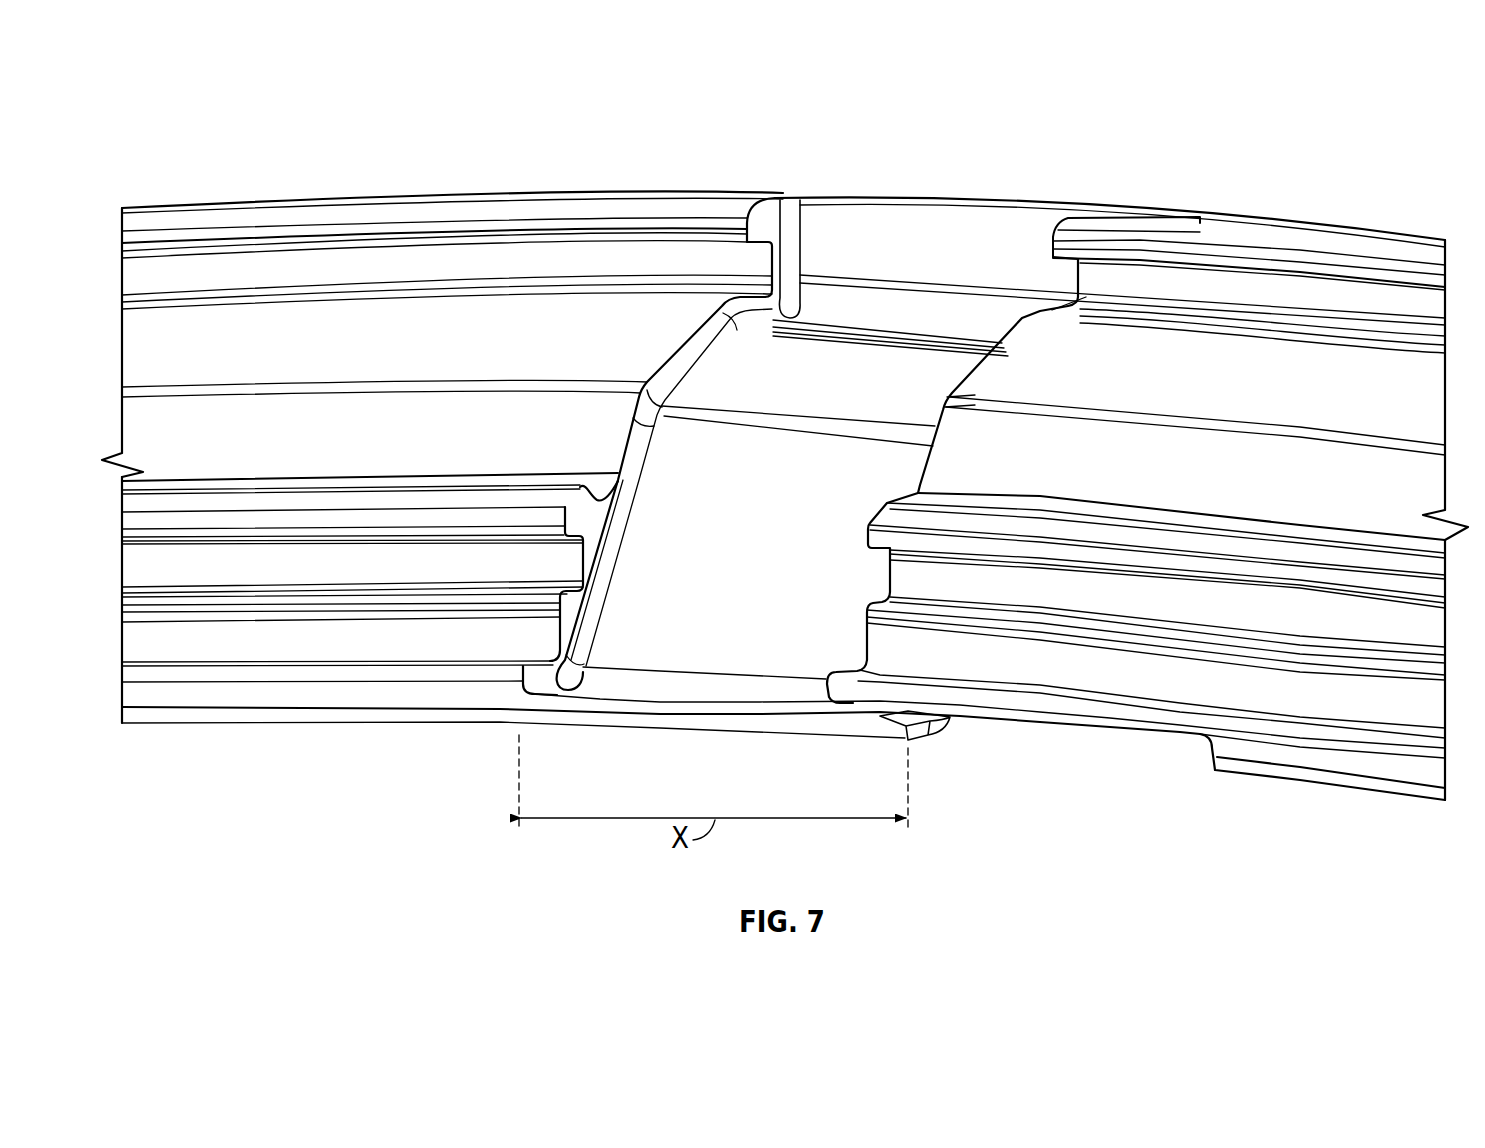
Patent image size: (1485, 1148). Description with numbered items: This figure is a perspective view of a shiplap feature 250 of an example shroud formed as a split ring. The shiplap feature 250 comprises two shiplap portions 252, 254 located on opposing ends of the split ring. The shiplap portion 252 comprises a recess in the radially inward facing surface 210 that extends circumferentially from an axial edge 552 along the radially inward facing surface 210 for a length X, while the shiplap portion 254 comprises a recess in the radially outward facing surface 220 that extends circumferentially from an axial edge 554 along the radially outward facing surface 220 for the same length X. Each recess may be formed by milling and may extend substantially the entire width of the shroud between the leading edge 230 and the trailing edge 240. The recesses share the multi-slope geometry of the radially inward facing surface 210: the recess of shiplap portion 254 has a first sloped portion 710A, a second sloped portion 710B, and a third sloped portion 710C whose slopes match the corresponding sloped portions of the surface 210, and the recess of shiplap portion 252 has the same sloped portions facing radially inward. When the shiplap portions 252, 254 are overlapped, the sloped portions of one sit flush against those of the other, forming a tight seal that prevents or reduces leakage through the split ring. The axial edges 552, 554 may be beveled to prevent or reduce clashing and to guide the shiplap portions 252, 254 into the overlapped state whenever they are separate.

The radially inward facing surface 210 is at (1255, 781).
The radially outward facing surface 220 is at (385, 335).
The leading edge 230 is at (268, 713).
The trailing edge 240 is at (1255, 225).
The shiplap feature 250 is at (1342, 93).
The shiplap portion 252 is at (1104, 731).
The shiplap portion 254 is at (863, 378).
The axial edge 552 is at (848, 689).
The axial edge 554 is at (926, 727).
The first sloped portion 710A is at (723, 593).
The second sloped portion 710B is at (770, 375).
The third sloped portion 710C is at (978, 337).